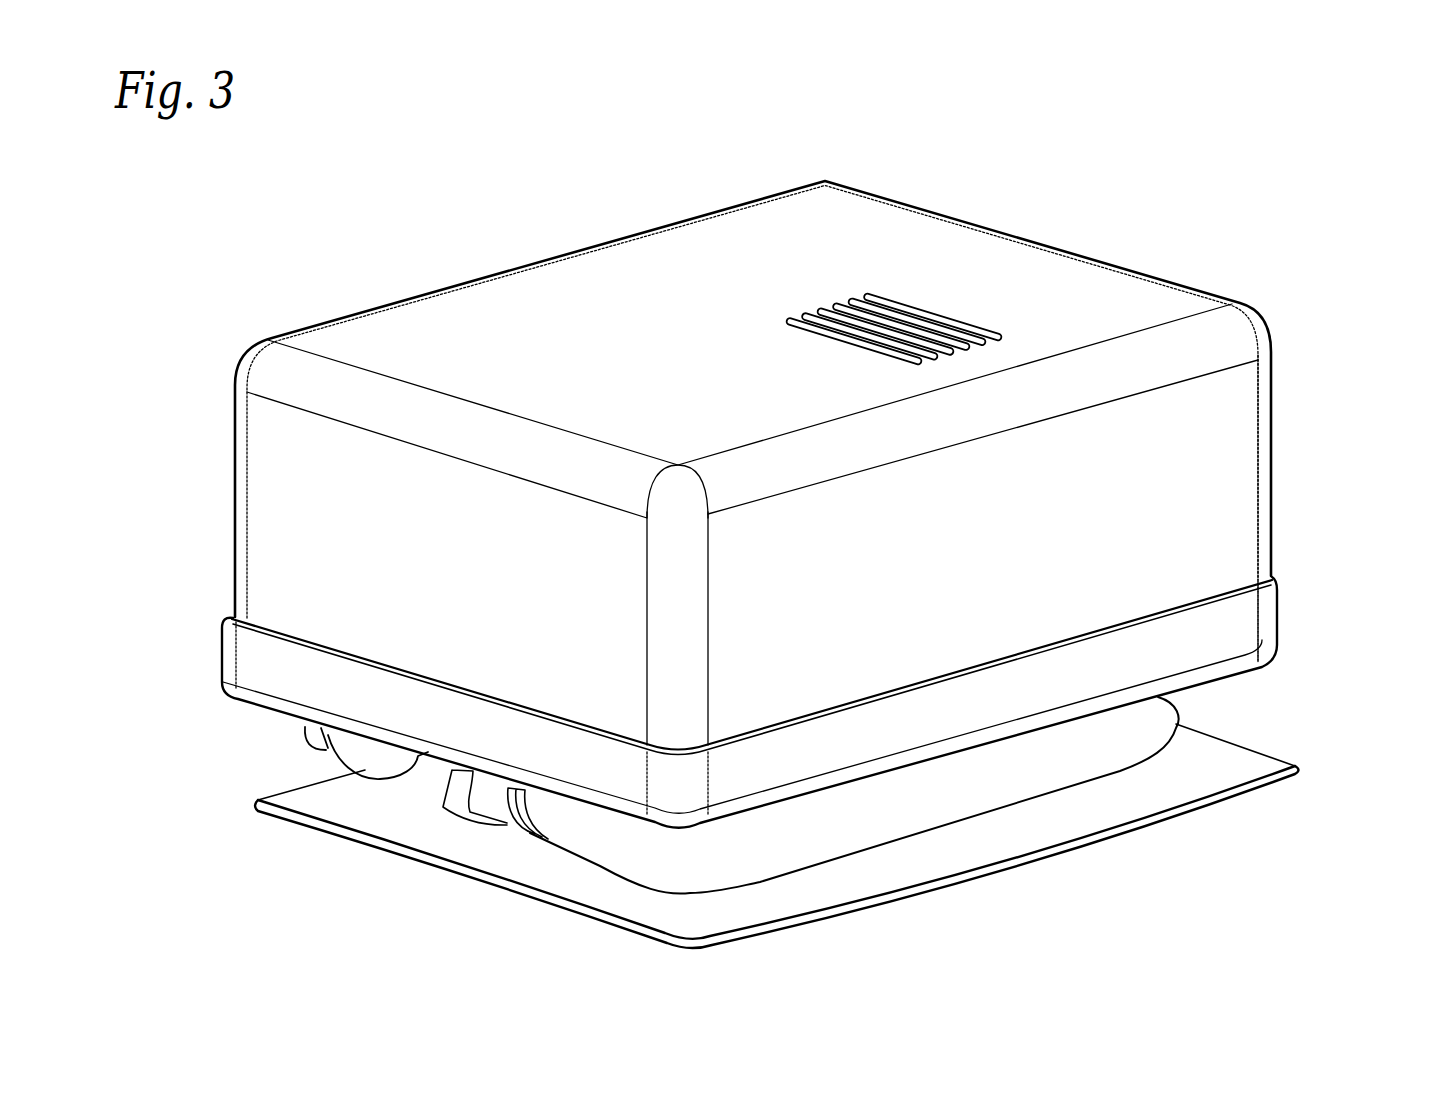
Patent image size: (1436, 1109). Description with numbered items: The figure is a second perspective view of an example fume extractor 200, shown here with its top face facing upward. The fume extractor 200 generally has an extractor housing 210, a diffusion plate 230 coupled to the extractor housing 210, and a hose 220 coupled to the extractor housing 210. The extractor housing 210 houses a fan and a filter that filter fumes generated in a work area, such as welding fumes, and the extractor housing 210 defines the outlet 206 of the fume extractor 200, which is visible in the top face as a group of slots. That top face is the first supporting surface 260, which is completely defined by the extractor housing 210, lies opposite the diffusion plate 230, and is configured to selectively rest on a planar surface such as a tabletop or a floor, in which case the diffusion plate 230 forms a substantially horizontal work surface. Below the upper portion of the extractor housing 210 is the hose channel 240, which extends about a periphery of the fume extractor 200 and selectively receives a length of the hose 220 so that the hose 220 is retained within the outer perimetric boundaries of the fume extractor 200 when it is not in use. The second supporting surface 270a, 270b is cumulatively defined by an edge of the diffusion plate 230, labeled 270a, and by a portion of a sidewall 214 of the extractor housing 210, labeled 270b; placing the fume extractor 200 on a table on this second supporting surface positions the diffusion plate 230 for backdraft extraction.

The fume extractor 200 is at (455, 245).
The first supporting surface 260 is at (872, 218).
The outlet 206 is at (882, 323).
The extractor housing 210 is at (1278, 373).
The second supporting surface 270b is at (1232, 412).
The sidewall 214 is at (1228, 504).
The hose channel 240 is at (1228, 709).
The hose 220 is at (1079, 761).
The second supporting surface 270a is at (1006, 856).
The diffusion plate 230 is at (838, 920).